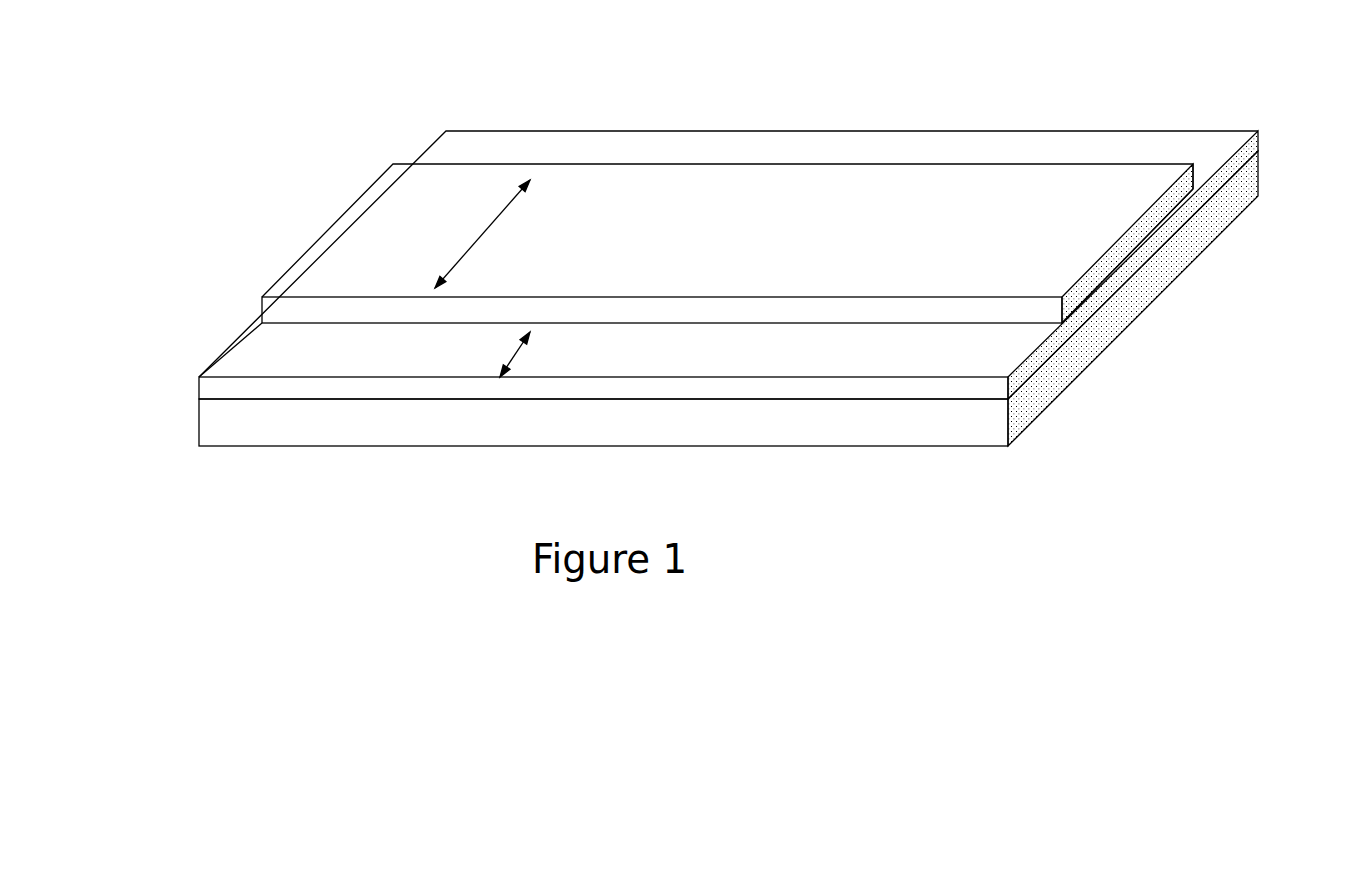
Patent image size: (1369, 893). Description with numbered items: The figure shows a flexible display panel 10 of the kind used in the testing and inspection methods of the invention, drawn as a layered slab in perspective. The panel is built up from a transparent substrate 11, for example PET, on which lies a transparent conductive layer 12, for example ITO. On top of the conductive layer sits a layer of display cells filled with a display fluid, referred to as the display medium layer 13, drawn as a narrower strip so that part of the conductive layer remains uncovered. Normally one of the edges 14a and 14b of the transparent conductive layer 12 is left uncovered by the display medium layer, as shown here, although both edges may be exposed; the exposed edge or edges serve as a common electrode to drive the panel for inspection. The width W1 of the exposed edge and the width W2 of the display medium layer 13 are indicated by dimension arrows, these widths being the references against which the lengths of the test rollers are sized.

The display panel 10 is at (682, 277).
The transparent substrate 11 is at (168, 420).
The transparent conductive layer 12 is at (202, 332).
The display medium layer 13 is at (312, 174).
The exposed edge of the transparent conductive layer 14a is at (1002, 345).
The exposed edge of the transparent conductive layer 14b is at (1210, 138).
The width of the exposed edge W1 is at (559, 352).
The width of the display medium layer W2 is at (512, 234).